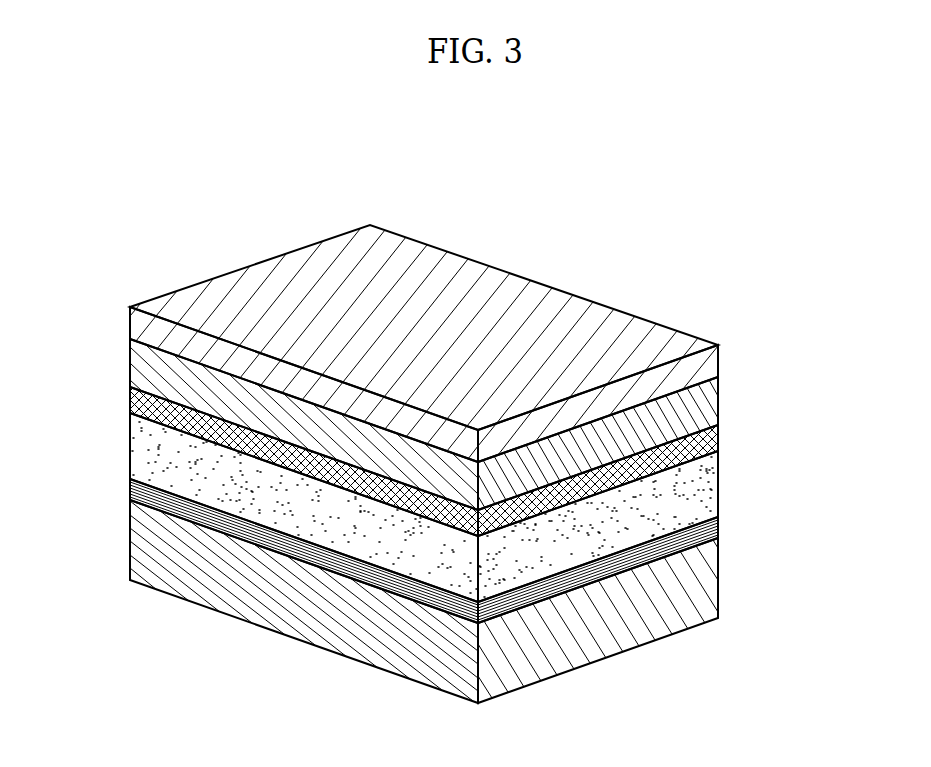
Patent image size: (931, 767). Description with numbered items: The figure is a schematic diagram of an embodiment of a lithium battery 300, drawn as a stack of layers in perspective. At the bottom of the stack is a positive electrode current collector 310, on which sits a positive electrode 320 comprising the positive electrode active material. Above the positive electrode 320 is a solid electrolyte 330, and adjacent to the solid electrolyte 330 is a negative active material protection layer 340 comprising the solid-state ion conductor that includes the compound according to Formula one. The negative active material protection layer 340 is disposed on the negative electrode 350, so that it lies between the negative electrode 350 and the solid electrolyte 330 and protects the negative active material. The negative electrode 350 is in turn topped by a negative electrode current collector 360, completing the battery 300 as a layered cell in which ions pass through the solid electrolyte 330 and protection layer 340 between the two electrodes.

The battery 300 is at (118, 182).
The positive electrode current collector 310 is at (718, 607).
The positive electrode 320 is at (718, 523).
The solid electrolyte 330 is at (718, 483).
The negative active material protection layer 340 is at (718, 437).
The negative electrode 350 is at (718, 400).
The negative electrode current collector 360 is at (718, 346).